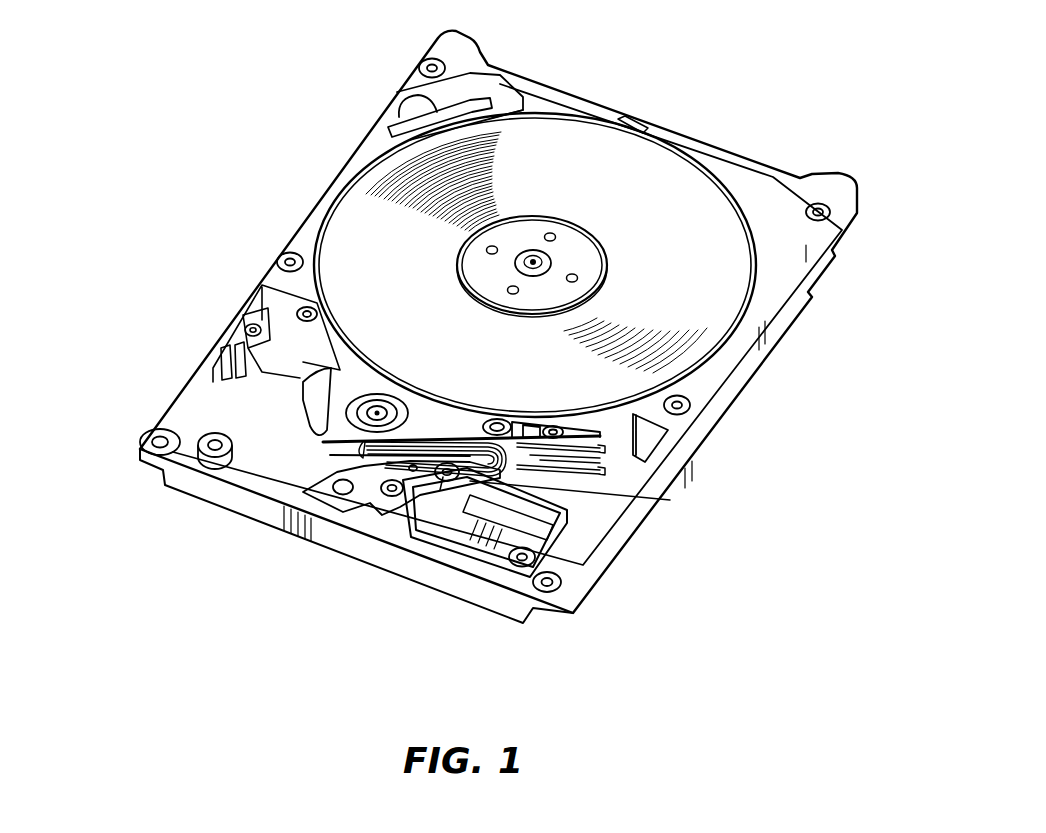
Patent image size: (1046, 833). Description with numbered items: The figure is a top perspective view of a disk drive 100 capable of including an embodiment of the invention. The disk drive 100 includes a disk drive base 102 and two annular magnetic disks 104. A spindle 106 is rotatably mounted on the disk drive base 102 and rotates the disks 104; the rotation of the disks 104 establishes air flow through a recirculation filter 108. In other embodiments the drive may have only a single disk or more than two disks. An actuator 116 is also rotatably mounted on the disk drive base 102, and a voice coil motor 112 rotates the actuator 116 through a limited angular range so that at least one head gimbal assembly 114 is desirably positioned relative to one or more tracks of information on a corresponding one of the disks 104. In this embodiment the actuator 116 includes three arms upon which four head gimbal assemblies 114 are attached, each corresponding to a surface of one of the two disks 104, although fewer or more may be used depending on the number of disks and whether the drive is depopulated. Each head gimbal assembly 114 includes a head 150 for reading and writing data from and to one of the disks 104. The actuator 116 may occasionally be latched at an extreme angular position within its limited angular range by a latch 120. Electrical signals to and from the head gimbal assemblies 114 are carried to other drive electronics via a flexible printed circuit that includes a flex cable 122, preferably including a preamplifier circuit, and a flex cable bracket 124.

The disk drive 100 is at (714, 69).
The disk drive base 102 is at (208, 490).
The annular magnetic disks 104 is at (353, 235).
The spindle 106 is at (578, 253).
The recirculation filter 108 is at (437, 115).
The voice coil motor 112 is at (248, 410).
The head gimbal assembly 114 is at (583, 445).
The actuator 116 is at (415, 413).
The latch 120 is at (217, 338).
The flex cable 122 is at (462, 445).
The flex cable bracket 124 is at (447, 517).
The head 150 is at (583, 447).